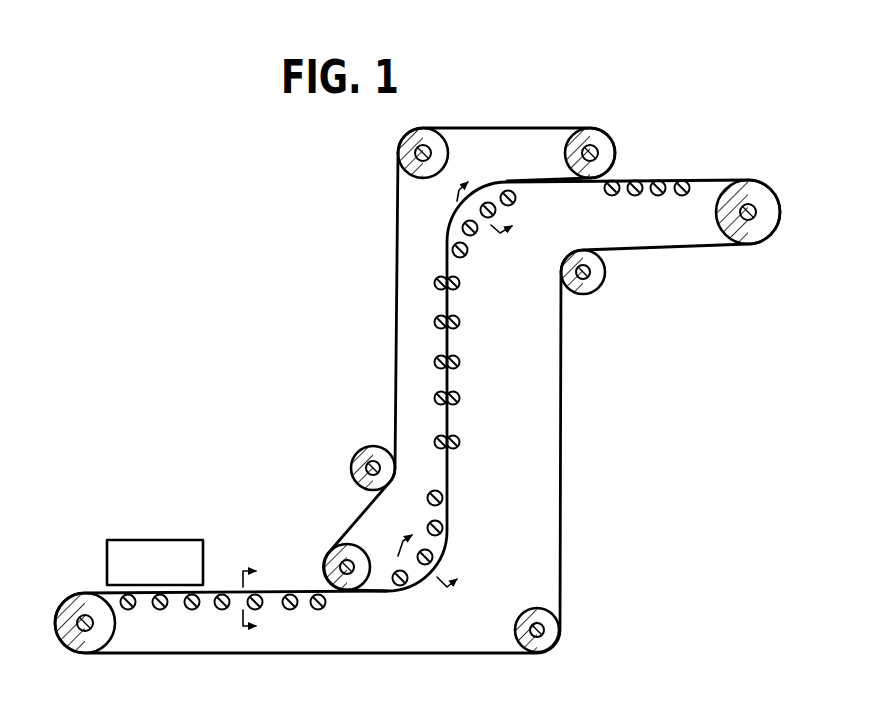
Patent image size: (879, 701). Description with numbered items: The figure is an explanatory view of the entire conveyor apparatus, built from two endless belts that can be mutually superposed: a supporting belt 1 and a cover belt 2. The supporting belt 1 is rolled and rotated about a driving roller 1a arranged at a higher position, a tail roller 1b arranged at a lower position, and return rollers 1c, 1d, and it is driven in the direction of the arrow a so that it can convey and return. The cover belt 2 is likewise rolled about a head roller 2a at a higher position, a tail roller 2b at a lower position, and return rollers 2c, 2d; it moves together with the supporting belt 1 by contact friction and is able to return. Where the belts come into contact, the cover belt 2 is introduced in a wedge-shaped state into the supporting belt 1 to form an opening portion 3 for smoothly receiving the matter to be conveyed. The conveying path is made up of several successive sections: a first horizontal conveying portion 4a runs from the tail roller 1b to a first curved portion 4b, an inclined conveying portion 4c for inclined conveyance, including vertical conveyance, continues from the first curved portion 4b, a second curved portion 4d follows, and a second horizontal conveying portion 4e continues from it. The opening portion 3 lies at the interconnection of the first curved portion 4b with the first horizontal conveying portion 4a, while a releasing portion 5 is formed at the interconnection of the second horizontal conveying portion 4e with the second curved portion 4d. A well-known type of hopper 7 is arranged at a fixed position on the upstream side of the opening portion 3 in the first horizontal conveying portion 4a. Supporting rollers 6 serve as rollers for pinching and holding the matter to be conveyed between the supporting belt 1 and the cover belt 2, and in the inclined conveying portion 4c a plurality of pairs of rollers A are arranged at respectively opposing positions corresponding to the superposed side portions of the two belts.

The supporting belt 1 is at (561, 343).
The driving roller 1a is at (745, 244).
The tail roller 1b is at (88, 648).
The return roller 1c is at (603, 278).
The return roller 1d is at (519, 613).
The cover belt 2 is at (396, 283).
The head roller 2a is at (564, 156).
The tail roller 2b is at (332, 553).
The return roller 2c is at (448, 153).
The return roller 2d is at (354, 462).
The opening portion 3 is at (318, 583).
The first horizontal conveying portion 4a is at (226, 614).
The first curved portion 4b is at (511, 554).
The inclined conveying portion 4c is at (466, 387).
The second curved portion 4d is at (480, 240).
The second horizontal conveying portion 4e is at (701, 172).
The releasing portion 5 is at (621, 168).
The supporting rollers 6 is at (190, 609).
The hopper 7 is at (157, 552).
The pairs of rollers A is at (436, 296).
The arrow a is at (468, 470).